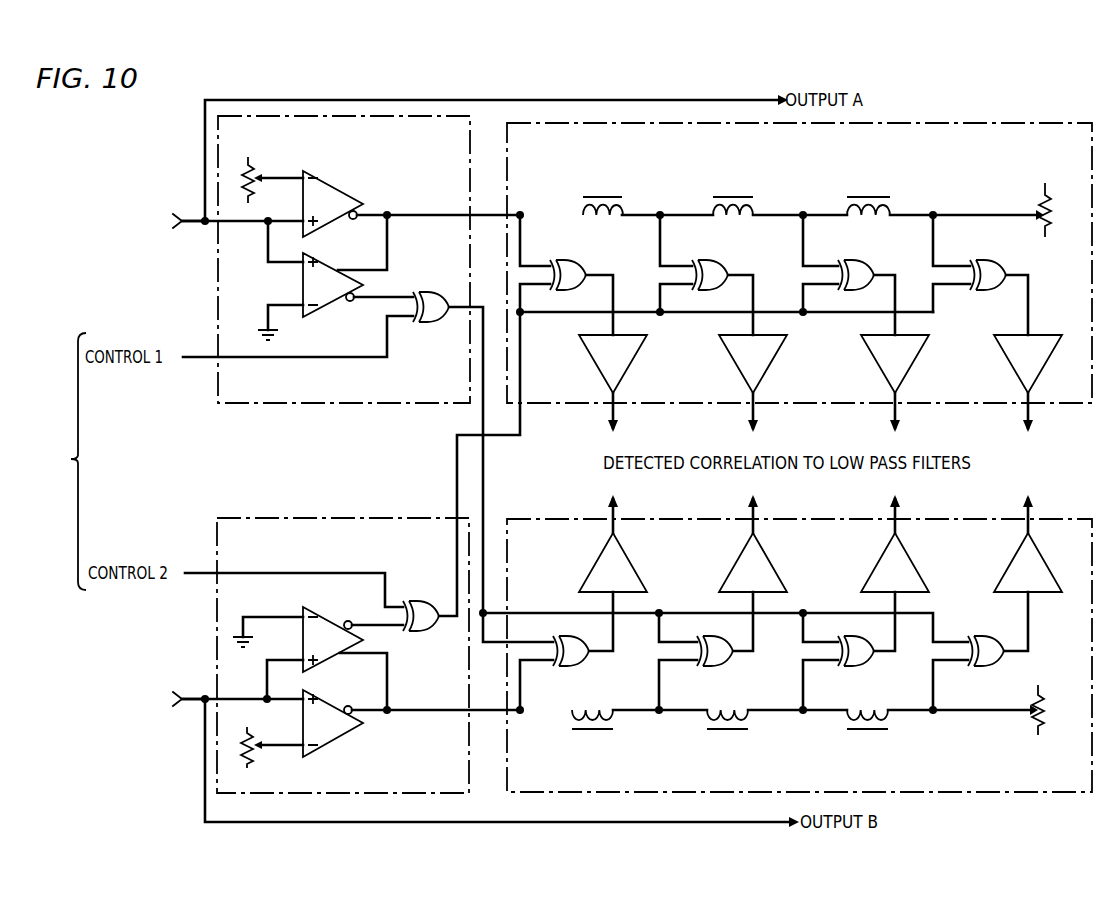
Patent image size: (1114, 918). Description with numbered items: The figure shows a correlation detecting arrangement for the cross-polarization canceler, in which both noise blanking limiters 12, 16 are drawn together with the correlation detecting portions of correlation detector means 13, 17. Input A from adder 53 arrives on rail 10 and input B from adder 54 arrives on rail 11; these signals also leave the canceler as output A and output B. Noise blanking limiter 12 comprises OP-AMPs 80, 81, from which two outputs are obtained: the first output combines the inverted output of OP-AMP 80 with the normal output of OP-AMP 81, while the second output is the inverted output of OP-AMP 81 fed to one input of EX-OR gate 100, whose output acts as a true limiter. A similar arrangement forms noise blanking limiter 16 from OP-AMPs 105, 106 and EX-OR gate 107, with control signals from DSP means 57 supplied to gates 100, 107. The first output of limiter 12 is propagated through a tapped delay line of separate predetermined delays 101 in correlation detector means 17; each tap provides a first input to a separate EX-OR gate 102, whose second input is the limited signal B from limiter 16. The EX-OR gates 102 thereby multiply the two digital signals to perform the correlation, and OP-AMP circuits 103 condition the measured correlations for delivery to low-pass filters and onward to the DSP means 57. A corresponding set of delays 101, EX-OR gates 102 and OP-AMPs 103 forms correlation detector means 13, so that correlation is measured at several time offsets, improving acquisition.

The rail 10 is at (205, 212).
The rail 11 is at (205, 716).
The noise blanking limiter 12 is at (419, 168).
The correlation detector means 13 is at (905, 776).
The noise blanking limiter 16 is at (393, 567).
The correlation detector means 17 is at (925, 152).
The adder 53 is at (103, 253).
The adder 54 is at (103, 732).
The digital signal processor means 57 is at (31, 491).
The OP-AMP 80 is at (341, 193).
The OP-AMP 81 is at (325, 265).
The EX-OR gate 100 is at (425, 293).
The predetermined delay 101 is at (624, 203).
The EX-OR gate 102 is at (576, 260).
The OP-AMP circuit 103 is at (630, 362).
The OP-AMP 105 is at (334, 738).
The OP-AMP 106 is at (325, 617).
The EX-OR gate 107 is at (428, 628).